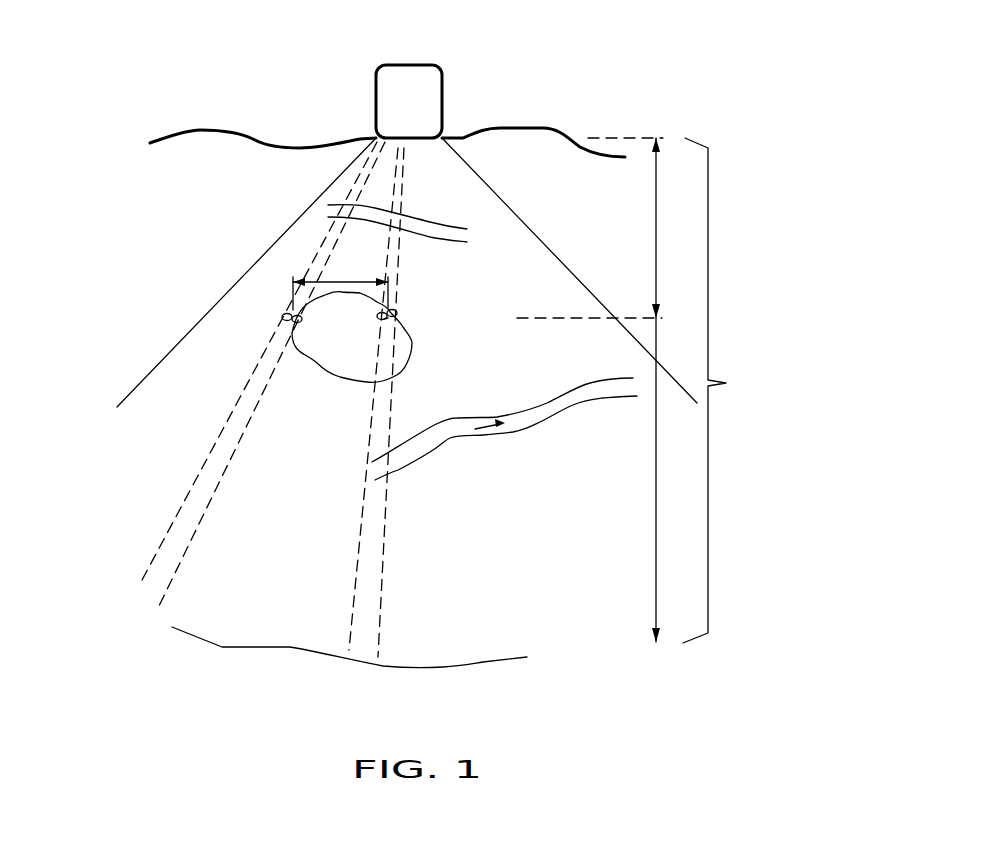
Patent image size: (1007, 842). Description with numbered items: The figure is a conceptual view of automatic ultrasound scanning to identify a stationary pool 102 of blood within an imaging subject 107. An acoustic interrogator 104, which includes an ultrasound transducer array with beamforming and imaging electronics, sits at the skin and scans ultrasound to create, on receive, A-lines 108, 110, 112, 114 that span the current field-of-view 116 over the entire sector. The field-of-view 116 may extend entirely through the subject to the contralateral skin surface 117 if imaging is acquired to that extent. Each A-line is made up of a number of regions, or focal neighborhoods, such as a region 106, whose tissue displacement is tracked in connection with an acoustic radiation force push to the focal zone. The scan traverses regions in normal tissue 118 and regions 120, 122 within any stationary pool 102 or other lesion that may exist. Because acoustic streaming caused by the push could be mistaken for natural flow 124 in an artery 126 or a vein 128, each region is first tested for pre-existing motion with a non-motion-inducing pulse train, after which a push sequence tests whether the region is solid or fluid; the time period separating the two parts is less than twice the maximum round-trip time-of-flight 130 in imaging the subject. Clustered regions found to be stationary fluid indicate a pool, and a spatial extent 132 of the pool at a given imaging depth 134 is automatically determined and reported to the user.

The stationary pool 102 is at (403, 368).
The acoustic interrogator 104 is at (437, 84).
The region 106 is at (283, 317).
The imaging subject 107 is at (188, 147).
The A-line 108 is at (227, 425).
The A-line 110 is at (213, 493).
The A-line 112 is at (357, 568).
The A-line 114 is at (383, 557).
The current field-of-view 116 is at (165, 358).
The contralateral skin surface 117 is at (490, 662).
The normal tissue 118 is at (457, 343).
The region 120 is at (383, 320).
The region 122 is at (397, 313).
The natural flow 124 is at (488, 433).
The artery 126 is at (413, 458).
The vein 128 is at (425, 218).
The maximum round-trip time-of-flight 130 is at (770, 348).
The spatial extent 132 is at (350, 280).
The imaging depth 134 is at (640, 213).